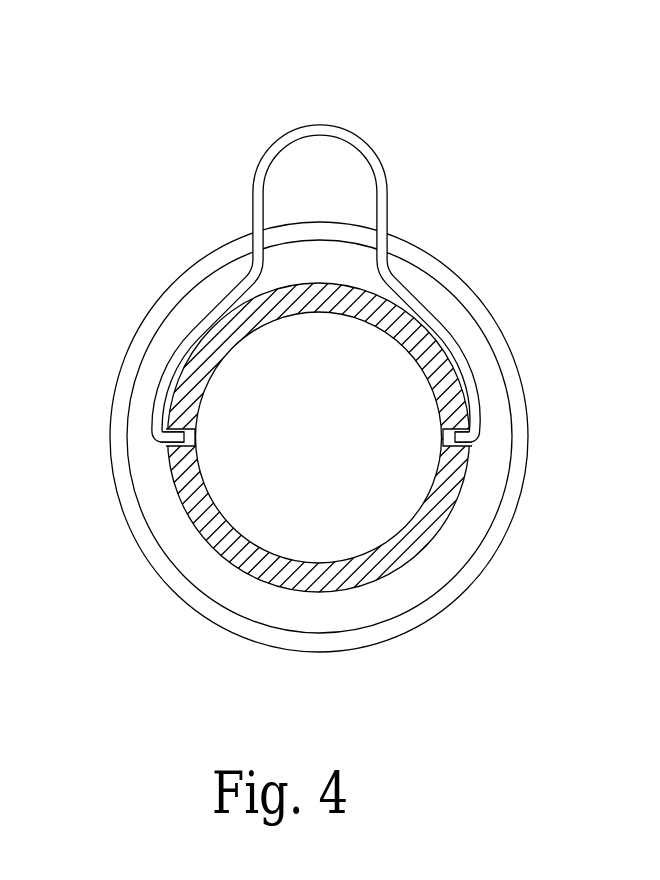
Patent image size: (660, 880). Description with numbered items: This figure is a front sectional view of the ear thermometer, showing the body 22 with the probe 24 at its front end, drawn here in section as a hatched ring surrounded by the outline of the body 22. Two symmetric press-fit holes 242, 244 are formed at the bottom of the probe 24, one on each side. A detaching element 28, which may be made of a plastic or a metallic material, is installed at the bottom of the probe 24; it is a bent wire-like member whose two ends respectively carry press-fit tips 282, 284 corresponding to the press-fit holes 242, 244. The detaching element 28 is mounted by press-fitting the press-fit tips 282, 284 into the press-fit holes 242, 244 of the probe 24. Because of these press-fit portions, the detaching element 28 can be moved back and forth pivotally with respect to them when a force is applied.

The body 22 is at (471, 291).
The probe 24 is at (413, 542).
The press-fit hole 242 is at (196, 433).
The press-fit hole 244 is at (443, 440).
The detaching element 28 is at (257, 162).
The press-fit tip 282 is at (160, 447).
The press-fit tip 284 is at (481, 430).